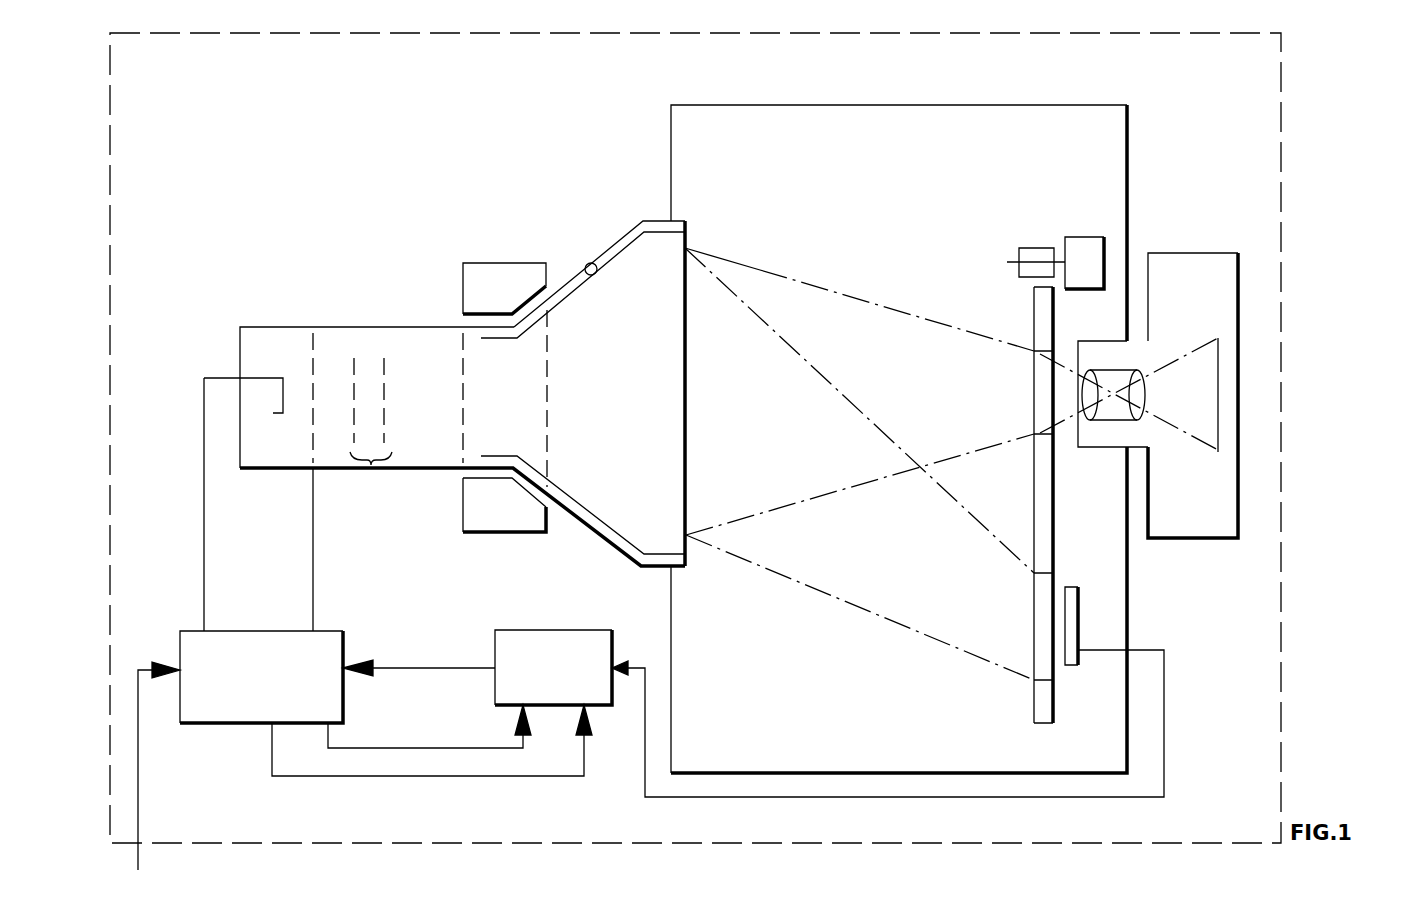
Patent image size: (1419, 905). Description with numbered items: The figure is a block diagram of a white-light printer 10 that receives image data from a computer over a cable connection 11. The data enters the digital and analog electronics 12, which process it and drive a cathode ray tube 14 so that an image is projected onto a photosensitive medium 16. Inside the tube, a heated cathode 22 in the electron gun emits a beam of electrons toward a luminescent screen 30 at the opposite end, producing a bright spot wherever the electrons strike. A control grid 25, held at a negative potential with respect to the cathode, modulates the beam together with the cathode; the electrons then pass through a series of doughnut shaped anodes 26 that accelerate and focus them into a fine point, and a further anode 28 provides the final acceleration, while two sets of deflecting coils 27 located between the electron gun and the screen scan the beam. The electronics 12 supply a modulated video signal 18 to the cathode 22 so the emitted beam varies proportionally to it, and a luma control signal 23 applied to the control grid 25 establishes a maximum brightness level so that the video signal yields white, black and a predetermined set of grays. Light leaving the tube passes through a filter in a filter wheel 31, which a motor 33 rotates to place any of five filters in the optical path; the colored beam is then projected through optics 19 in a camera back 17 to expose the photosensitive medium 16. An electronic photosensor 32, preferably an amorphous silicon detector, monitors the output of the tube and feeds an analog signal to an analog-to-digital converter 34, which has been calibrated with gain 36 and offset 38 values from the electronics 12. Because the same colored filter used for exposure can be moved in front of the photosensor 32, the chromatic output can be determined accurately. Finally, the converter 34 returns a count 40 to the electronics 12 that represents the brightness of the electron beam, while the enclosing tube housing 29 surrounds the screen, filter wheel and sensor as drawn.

The printer 10 is at (163, 82).
The cable connection 11 is at (154, 780).
The digital and analog electronics 12 is at (258, 686).
The cathode ray tube 14 is at (669, 544).
The photosensitive medium 16 is at (1218, 370).
The camera back 17 is at (1197, 253).
The modulated signal 18 is at (205, 567).
The optics 19 is at (1114, 370).
The heated cathode 22 is at (230, 378).
The luma control signal 23 is at (313, 570).
The control grid 25 is at (316, 373).
The doughnut shaped anodes 26 is at (372, 464).
The deflecting coils 27 is at (483, 272).
The anode 28 is at (590, 262).
The spectrometer housing 29 is at (713, 761).
The luminescent screen 30 is at (692, 297).
The filter wheel 31 is at (1033, 317).
The electronic photosensor 32 is at (1078, 616).
The motor 33 is at (1088, 237).
The analog-to-digital converter 34 is at (600, 698).
The gain 36 is at (406, 777).
The offset 38 is at (445, 748).
The count 40 is at (435, 668).